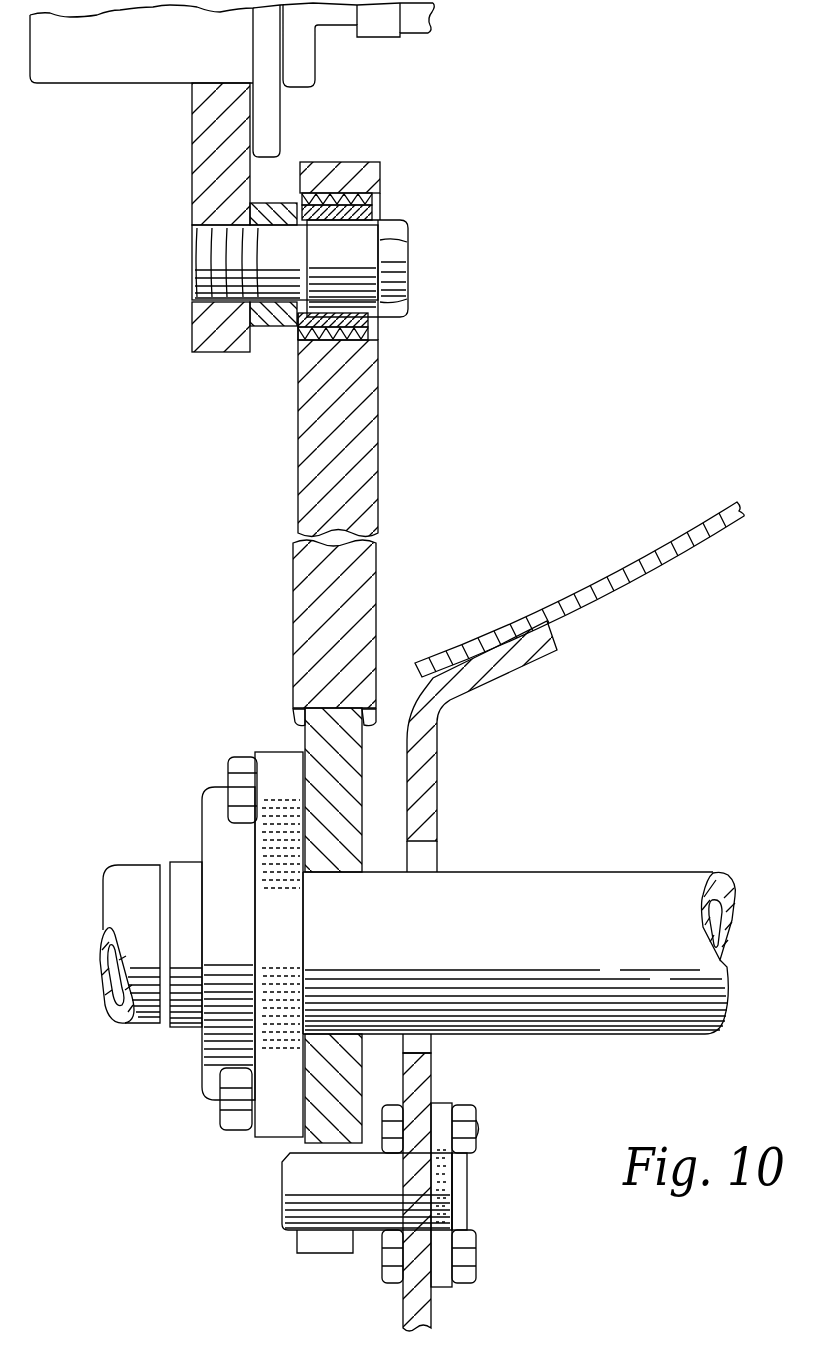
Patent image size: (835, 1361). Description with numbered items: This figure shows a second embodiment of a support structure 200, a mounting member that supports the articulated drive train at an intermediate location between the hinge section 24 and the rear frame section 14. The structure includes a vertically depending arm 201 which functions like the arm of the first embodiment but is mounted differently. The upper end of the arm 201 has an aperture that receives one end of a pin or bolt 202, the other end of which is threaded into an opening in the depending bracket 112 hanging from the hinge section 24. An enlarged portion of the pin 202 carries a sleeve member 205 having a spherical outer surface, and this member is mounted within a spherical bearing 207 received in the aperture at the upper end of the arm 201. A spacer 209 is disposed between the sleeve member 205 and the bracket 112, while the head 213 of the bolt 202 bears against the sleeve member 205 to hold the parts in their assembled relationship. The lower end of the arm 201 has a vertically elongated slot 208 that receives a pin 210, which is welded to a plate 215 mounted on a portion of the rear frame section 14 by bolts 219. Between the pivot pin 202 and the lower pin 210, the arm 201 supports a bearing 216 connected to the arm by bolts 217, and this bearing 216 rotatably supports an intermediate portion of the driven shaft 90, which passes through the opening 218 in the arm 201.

The hinge section 24 is at (119, 86).
The depending bracket 112 is at (202, 327).
The pin or bolt 202 is at (243, 249).
The spherical bearing 207 is at (382, 170).
The sleeve member 205 is at (383, 203).
The head 213 is at (392, 288).
The spacer 209 is at (274, 328).
The support structure 200 is at (379, 481).
The vertically depending arm 201 is at (312, 510).
The rear frame section 14 is at (437, 781).
The driven shaft 90 is at (556, 893).
The opening 218 is at (336, 875).
The bolts 217 is at (240, 787).
The bearing 216 is at (220, 827).
The vertically elongated slot 208 is at (323, 1142).
The pin 210 is at (317, 1198).
The plate 215 is at (442, 1113).
The bolts 219 is at (480, 1132).